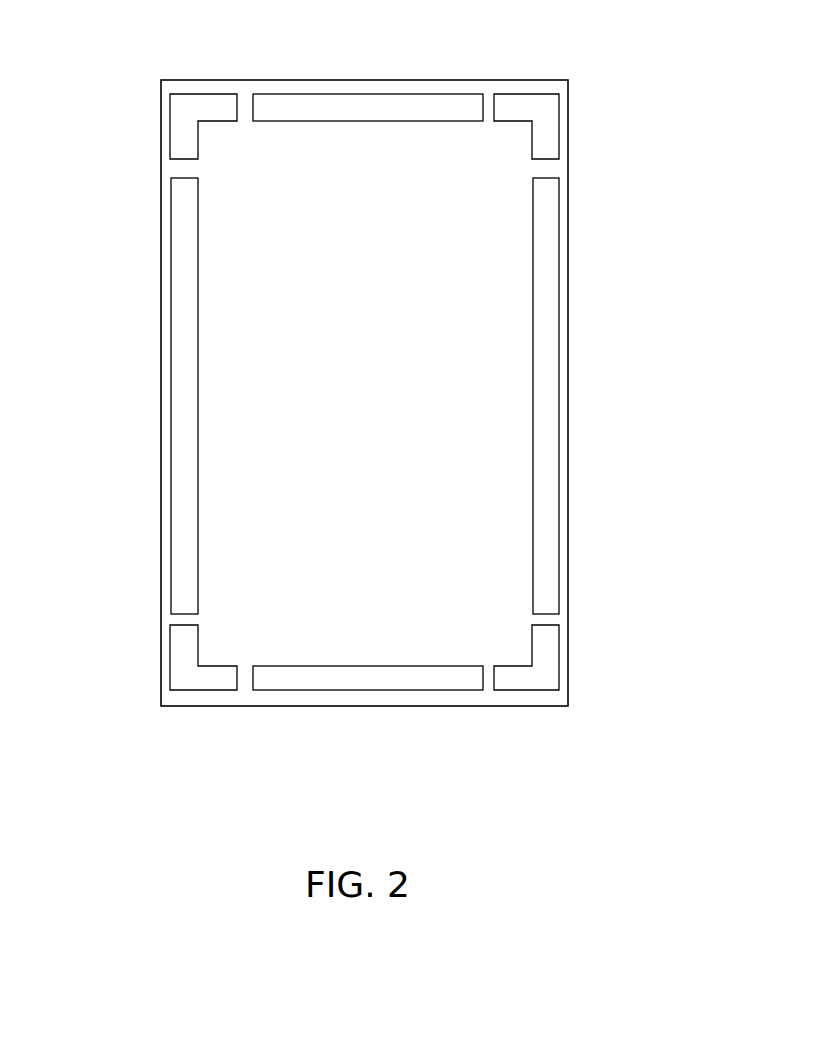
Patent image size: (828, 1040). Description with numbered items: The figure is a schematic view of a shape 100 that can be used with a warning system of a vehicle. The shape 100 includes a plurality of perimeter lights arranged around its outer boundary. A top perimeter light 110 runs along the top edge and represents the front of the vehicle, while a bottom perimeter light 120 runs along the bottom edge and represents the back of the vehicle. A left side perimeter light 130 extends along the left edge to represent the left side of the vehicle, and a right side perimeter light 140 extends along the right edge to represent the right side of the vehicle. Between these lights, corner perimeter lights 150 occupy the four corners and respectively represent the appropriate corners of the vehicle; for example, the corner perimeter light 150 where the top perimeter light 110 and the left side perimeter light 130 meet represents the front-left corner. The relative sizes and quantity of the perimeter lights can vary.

The shape 100 is at (577, 229).
The top perimeter light 110 is at (383, 107).
The bottom perimeter light 120 is at (422, 688).
The left side perimeter light 130 is at (183, 316).
The right side perimeter light 140 is at (543, 402).
The corner perimeter light 150 is at (192, 112).